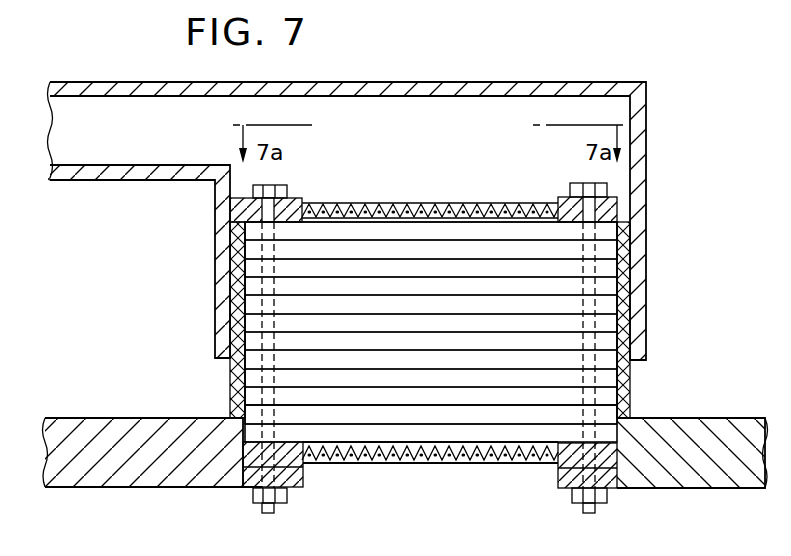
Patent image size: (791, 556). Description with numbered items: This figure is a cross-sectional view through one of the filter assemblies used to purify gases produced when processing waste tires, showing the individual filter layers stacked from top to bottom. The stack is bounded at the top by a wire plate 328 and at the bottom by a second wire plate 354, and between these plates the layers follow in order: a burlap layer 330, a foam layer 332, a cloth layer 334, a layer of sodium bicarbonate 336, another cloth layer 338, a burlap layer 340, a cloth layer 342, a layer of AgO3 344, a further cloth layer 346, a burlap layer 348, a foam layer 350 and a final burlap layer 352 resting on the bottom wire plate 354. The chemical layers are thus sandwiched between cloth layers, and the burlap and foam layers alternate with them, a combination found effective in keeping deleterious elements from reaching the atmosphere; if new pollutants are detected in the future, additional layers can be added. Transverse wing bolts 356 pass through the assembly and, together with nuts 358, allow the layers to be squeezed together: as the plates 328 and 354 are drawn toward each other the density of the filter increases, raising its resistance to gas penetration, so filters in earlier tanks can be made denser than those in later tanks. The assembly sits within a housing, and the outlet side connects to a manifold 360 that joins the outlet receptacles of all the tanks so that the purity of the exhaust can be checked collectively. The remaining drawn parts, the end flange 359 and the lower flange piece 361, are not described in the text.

The wire 328 is at (433, 201).
The burlap 330 is at (250, 229).
The foam 332 is at (250, 247).
The cloth 334 is at (250, 267).
The NaHCO3 336 is at (250, 285).
The cloth 338 is at (250, 306).
The burlap 340 is at (250, 326).
The cloth 342 is at (250, 346).
The AgO3 344 is at (250, 371).
The cloth 346 is at (250, 391).
The burlap 348 is at (610, 398).
The foam 350 is at (608, 416).
The burlap 352 is at (473, 438).
The wire 354 is at (410, 464).
The transverse wing bolts 356 is at (288, 186).
The nuts 358 is at (252, 494).
The end flange 359 is at (302, 198).
The manifold 360 is at (465, 78).
The lower flange 361 is at (557, 468).